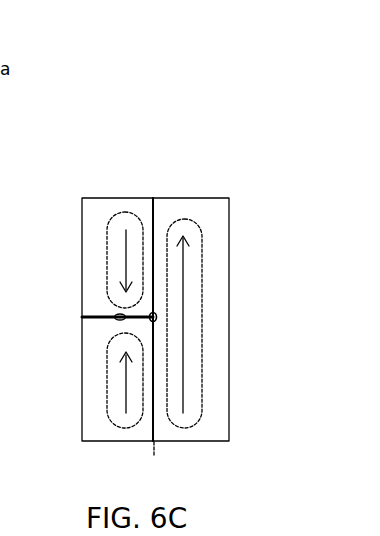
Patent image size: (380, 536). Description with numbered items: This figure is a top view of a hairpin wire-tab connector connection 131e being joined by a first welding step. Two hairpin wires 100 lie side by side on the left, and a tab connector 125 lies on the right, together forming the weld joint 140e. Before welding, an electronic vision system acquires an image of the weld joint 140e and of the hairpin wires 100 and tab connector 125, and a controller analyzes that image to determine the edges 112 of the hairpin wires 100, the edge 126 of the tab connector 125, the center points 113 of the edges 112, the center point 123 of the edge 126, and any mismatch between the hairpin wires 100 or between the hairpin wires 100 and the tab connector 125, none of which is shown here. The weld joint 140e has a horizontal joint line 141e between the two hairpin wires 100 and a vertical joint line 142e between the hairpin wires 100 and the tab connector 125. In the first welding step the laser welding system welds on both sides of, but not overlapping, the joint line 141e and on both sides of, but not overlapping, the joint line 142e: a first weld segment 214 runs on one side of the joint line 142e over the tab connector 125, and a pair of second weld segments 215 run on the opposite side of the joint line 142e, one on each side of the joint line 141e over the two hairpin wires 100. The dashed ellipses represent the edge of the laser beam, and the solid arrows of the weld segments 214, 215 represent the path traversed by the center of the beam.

The hairpin wires 100 is at (108, 194).
The edges 112 is at (143, 198).
The center points 113 is at (116, 312).
The center point 123 is at (157, 320).
The tab connector 125 is at (211, 194).
The edge 126 is at (176, 198).
The hairpin wire-tab connector connection 131e is at (186, 50).
The weld joint 140e is at (162, 102).
The joint line 141e is at (80, 317).
The joint line 142e is at (156, 208).
The first weld segment 214 is at (185, 286).
The second weld segments 215 is at (125, 253).